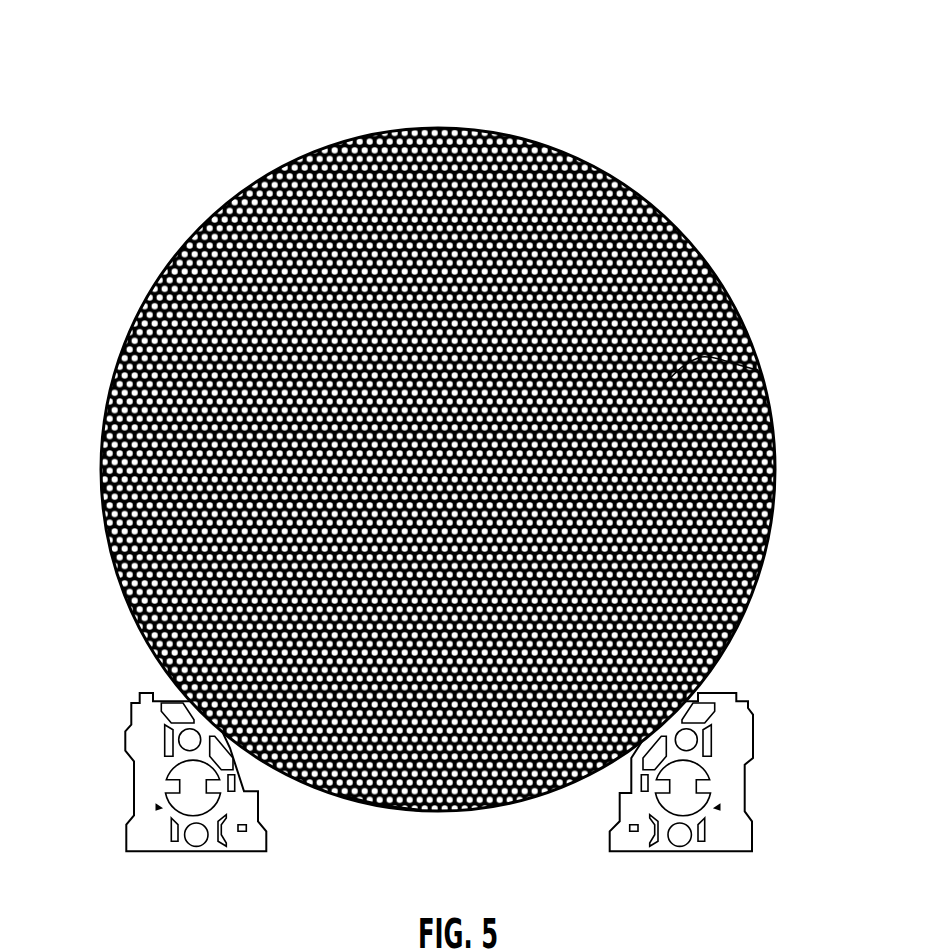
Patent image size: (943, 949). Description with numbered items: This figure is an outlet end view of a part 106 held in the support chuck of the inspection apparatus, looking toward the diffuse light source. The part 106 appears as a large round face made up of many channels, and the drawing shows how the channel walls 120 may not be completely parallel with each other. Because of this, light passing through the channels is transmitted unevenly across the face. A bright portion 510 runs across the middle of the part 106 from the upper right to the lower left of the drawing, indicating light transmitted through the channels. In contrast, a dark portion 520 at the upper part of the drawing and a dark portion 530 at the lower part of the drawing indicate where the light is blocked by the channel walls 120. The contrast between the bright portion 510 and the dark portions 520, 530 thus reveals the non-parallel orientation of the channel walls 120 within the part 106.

The part 106 is at (246, 108).
The channel walls 120 is at (750, 362).
The bright portion 510 is at (747, 303).
The dark portion 520 is at (556, 137).
The dark portion 530 is at (366, 810).